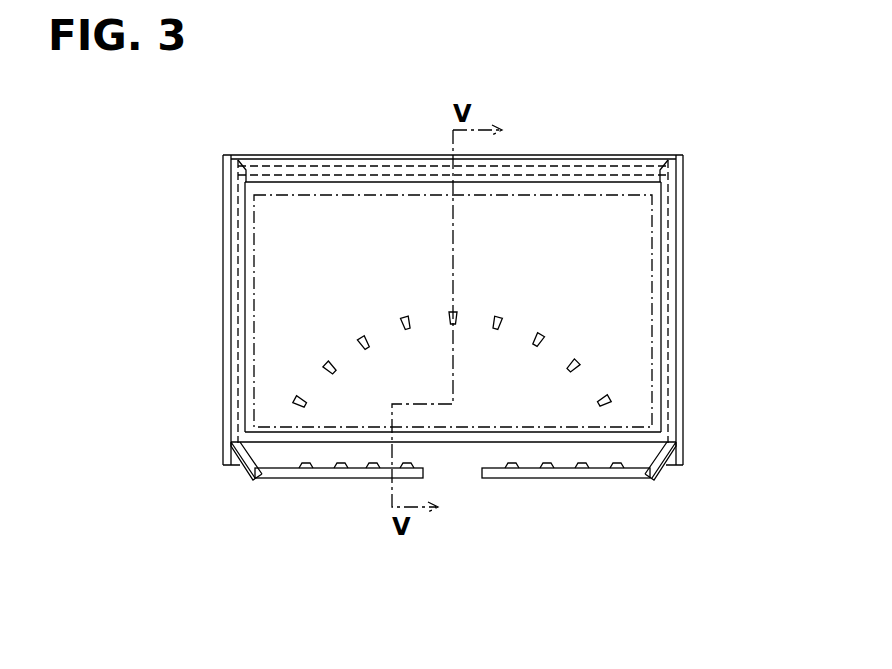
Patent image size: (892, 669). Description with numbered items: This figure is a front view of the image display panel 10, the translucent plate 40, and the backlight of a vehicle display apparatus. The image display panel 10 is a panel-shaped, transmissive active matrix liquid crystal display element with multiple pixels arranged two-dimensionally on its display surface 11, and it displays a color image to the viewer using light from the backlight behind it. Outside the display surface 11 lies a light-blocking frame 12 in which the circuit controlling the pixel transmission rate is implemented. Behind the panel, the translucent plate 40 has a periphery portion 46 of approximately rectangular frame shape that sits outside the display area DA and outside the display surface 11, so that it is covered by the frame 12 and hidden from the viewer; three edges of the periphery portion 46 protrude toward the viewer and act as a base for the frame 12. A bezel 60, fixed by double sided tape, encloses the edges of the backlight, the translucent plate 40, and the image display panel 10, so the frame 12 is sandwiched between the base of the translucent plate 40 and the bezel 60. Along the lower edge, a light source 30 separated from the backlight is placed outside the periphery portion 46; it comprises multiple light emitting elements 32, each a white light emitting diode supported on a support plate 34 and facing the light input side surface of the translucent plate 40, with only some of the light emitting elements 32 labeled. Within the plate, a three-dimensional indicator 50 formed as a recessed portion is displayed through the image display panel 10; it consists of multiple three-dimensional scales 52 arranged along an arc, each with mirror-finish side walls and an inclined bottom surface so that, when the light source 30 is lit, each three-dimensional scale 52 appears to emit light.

The image display panel 10 is at (245, 203).
The display surface 11 is at (245, 330).
The frame 12 is at (246, 171).
The light source 30 is at (449, 522).
The light emitting element 32 is at (307, 478).
The support plate 34 is at (275, 478).
The translucent plate 40 is at (617, 283).
The periphery portion 46 is at (668, 348).
The three-dimensional indicator 50 is at (549, 369).
The three-dimensional scale 52 is at (581, 372).
The bezel 60 is at (223, 231).
The display area DA is at (653, 211).